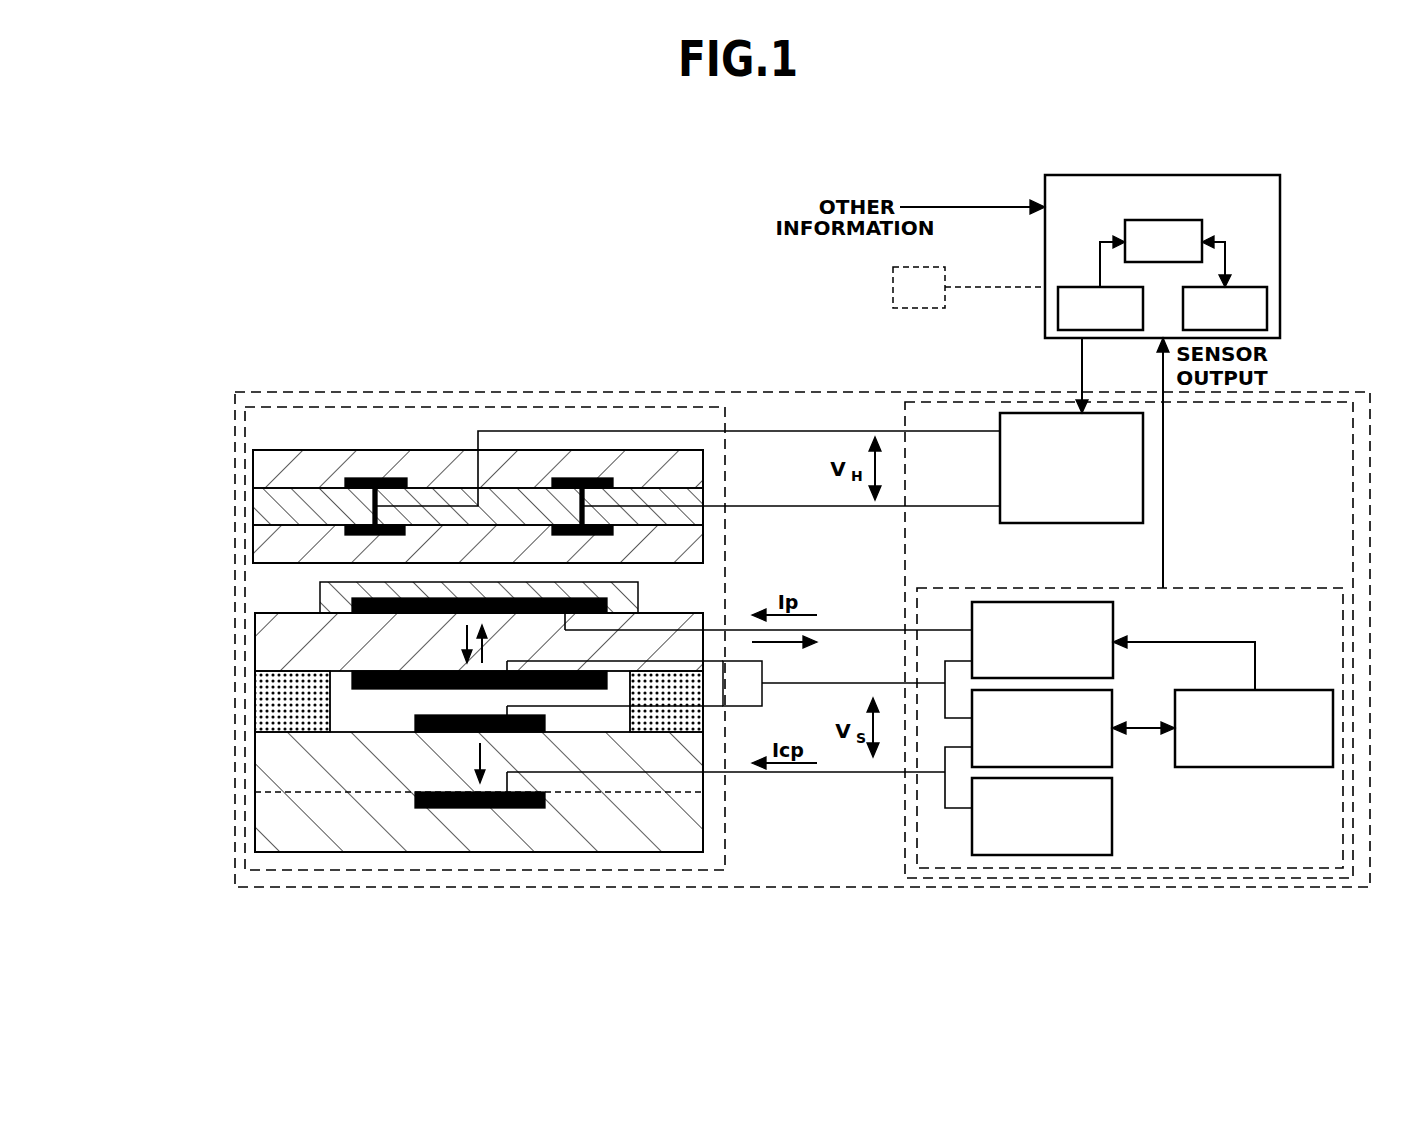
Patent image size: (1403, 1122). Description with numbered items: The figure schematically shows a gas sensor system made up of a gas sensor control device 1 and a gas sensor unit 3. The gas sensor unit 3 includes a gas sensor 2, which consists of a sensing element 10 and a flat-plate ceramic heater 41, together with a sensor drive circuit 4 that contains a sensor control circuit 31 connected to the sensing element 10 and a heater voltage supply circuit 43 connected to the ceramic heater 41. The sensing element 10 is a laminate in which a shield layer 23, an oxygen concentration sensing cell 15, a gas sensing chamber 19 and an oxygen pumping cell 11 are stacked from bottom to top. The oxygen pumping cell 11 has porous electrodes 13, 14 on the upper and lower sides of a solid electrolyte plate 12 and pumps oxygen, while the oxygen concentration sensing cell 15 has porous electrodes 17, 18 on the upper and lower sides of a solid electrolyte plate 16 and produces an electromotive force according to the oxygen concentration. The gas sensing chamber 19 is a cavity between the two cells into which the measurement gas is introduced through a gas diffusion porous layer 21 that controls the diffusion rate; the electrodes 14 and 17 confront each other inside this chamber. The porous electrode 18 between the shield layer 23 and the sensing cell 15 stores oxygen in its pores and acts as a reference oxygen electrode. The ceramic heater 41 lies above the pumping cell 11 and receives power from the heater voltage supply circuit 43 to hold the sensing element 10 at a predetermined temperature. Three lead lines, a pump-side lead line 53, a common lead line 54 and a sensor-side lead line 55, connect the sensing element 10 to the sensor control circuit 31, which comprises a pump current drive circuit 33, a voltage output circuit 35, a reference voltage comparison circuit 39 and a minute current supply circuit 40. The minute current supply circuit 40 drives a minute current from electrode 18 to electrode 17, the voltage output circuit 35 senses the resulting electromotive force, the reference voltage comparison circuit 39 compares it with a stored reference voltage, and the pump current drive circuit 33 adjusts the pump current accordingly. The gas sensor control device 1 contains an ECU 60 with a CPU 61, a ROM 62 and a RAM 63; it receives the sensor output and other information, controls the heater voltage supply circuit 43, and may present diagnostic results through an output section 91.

The gas sensor control device 1 is at (1012, 150).
The gas sensor 2 is at (725, 545).
The gas sensor unit 3 is at (708, 392).
The sensor drive circuit 4 is at (903, 543).
The sensing element 10 is at (461, 727).
The oxygen pumping cell 11 is at (410, 638).
The solid electrolyte plate 12 is at (300, 648).
The porous electrode 13 is at (360, 612).
The porous electrode 14 is at (375, 671).
The oxygen concentration sensing cell 15 is at (410, 783).
The solid electrolyte plate 16 is at (300, 772).
The porous electrode 17 is at (415, 723).
The porous electrode 18 is at (415, 800).
The gas sensing chamber 19 is at (360, 712).
The gas diffusion porous layer 21 is at (287, 695).
The shield layer 23 is at (307, 835).
The sensor control circuit 31 is at (1275, 588).
The pump current drive circuit 33 is at (1113, 662).
The voltage output circuit 35 is at (1112, 705).
The reference voltage comparison circuit 39 is at (1285, 690).
The minute current supply circuit 40 is at (1112, 813).
The ceramic heater 41 is at (375, 450).
The heater voltage supply circuit 43 is at (1037, 413).
The pump-side lead line 53 is at (852, 630).
The common lead line 54 is at (817, 683).
The sensor-side lead line 55 is at (848, 772).
The ECU 60 is at (1165, 222).
The CPU 61 is at (1193, 220).
The ROM 62 is at (1080, 287).
The RAM 63 is at (1242, 287).
The output section 91 is at (893, 280).